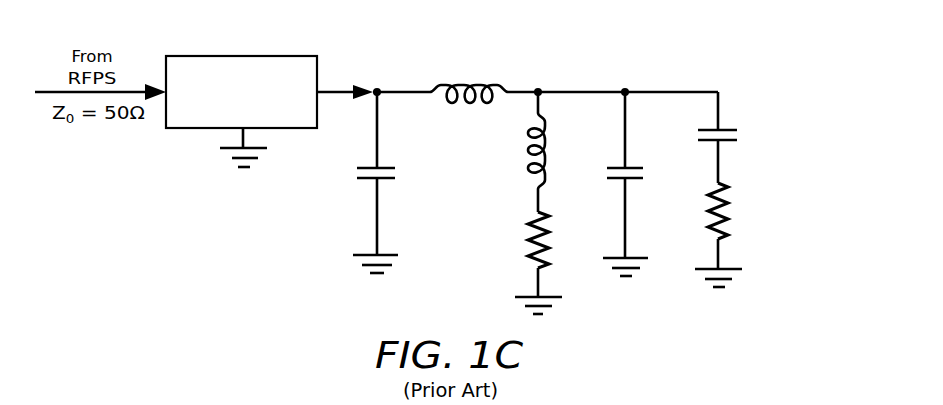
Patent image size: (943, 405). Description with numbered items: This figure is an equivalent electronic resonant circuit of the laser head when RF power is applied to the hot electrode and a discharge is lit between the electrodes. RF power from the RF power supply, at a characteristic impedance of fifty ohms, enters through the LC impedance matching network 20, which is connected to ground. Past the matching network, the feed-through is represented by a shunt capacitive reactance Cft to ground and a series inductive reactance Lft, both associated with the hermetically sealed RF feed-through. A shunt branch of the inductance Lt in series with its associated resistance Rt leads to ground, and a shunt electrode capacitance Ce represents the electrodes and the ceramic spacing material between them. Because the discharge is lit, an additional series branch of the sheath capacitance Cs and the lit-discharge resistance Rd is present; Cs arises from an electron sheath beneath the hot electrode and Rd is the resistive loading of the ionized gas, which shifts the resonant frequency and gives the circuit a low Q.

The LC impedance matching network 20 is at (203, 120).
The inductive reactance of RF feed-through Lft is at (469, 79).
The capacitive reactance of RF feed-through Cft is at (381, 182).
The inductance Lt is at (526, 152).
The resistance associated with inductance Rt is at (531, 263).
The electrode capacitance Ce is at (621, 184).
The sheath capacitance Cs is at (734, 137).
The lit-discharge resistance Rd is at (726, 235).